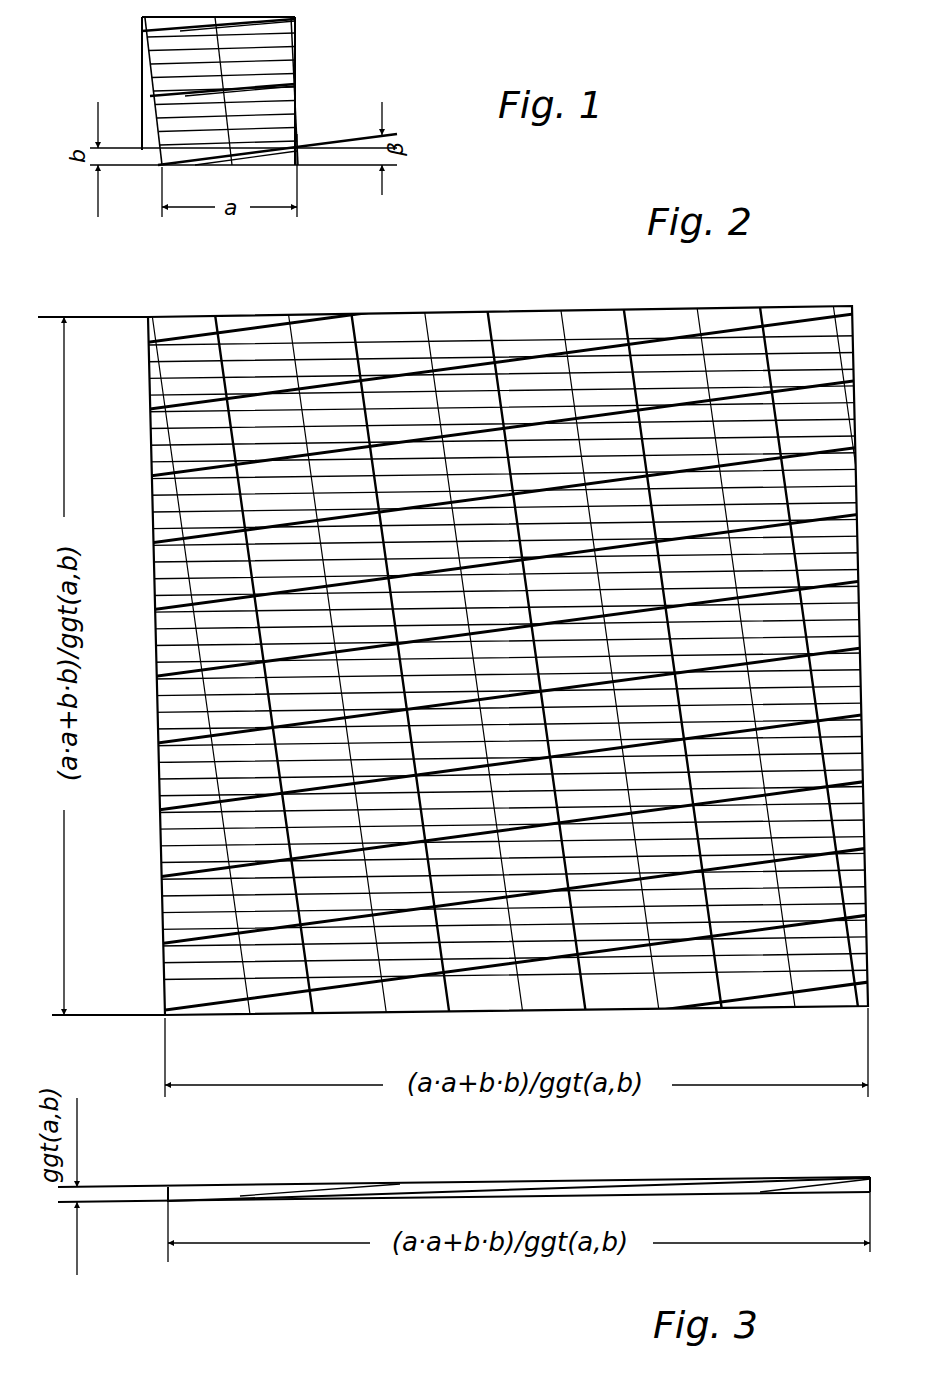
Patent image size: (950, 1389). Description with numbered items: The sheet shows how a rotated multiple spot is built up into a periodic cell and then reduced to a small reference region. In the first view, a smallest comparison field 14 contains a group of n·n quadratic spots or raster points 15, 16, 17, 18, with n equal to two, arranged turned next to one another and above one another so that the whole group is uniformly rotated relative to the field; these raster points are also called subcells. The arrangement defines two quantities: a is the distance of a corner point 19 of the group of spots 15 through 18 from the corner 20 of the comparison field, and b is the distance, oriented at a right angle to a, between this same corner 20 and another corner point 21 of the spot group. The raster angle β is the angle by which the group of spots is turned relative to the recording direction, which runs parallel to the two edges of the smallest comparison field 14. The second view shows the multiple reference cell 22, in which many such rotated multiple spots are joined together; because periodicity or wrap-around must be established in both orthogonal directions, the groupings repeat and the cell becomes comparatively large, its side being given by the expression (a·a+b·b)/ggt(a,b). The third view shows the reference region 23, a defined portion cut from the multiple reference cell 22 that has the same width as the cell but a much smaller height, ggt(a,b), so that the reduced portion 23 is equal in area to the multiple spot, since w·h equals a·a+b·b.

In FIG. 1, the smallest comparison field 14 is at (297, 70).
In FIG. 1, the spot 15 is at (177, 123).
In FIG. 1, the spot 16 is at (247, 137).
In FIG. 1, the spot 17 is at (170, 57).
In FIG. 1, the spot 18 is at (267, 40).
In FIG. 1, the corner point 19 is at (160, 167).
In FIG. 1, the corner of the comparison field 20 is at (300, 167).
In FIG. 1, the corner point 21 is at (298, 146).
In FIG. 2, the multiple reference cell 22 is at (517, 307).
In FIG. 3, the reference region 23 is at (670, 1177).